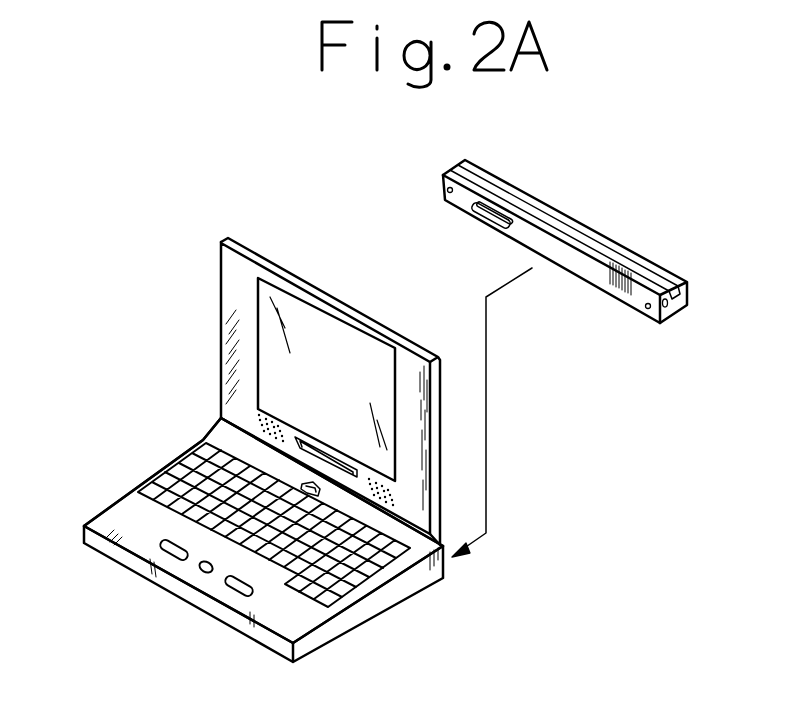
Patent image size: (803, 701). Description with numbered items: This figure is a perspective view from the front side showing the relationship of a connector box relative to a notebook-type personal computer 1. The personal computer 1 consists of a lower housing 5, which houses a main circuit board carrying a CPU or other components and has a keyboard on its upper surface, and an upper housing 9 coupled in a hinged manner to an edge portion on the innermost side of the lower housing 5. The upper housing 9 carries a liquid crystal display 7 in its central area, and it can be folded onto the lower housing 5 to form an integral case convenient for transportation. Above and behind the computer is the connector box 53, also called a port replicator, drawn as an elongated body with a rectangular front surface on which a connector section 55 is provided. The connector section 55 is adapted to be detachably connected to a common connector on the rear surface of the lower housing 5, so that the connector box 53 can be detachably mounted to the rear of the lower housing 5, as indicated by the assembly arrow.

The personal computer 1 is at (157, 288).
The lower housing 5 is at (112, 523).
The liquid crystal display 7 is at (347, 345).
The upper housing 9 is at (241, 282).
The connector box 53 is at (578, 262).
The connector section 55 is at (473, 214).